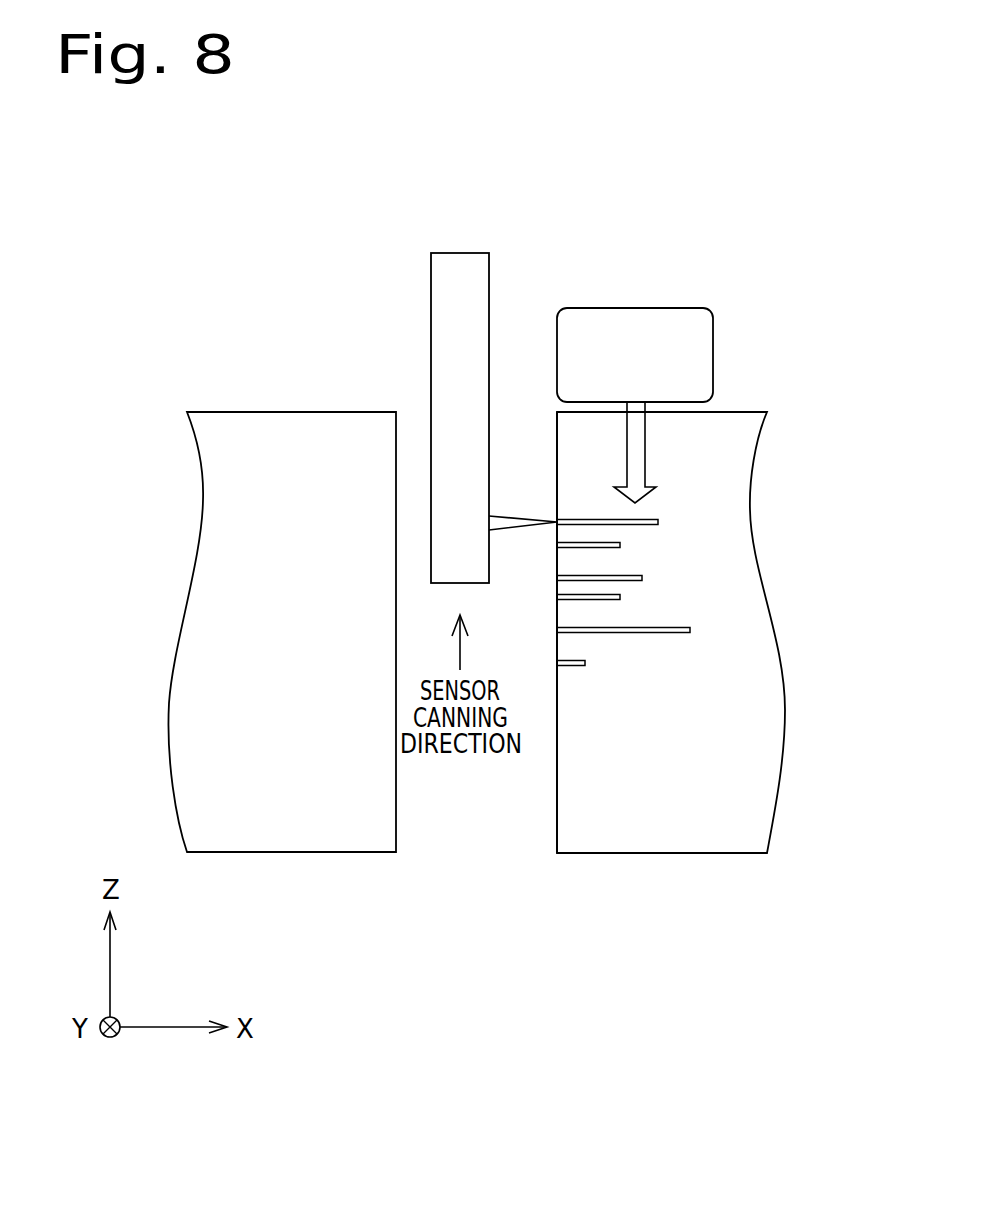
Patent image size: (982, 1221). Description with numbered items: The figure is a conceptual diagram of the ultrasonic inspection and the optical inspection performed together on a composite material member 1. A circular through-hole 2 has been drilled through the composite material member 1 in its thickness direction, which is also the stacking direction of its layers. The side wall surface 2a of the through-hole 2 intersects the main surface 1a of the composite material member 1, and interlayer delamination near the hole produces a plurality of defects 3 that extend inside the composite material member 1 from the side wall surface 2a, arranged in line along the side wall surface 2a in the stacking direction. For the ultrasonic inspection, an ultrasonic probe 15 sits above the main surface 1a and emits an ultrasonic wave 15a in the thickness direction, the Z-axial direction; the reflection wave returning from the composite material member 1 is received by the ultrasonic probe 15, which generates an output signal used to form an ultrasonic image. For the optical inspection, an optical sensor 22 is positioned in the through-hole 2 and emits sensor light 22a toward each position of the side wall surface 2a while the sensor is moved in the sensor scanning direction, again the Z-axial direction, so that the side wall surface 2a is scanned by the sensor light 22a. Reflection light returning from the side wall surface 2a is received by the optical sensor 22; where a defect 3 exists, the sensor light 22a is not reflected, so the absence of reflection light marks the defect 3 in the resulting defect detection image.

The composite material member 1 is at (750, 468).
The main surface 1a is at (728, 411).
The through-hole 2 is at (486, 818).
The side wall surface 2a is at (557, 826).
The defect 3 is at (659, 522).
The ultrasonic probe 15 is at (679, 308).
The ultrasonic wave 15a is at (641, 441).
The optical sensor 22 is at (459, 265).
The sensor light 22a is at (515, 521).